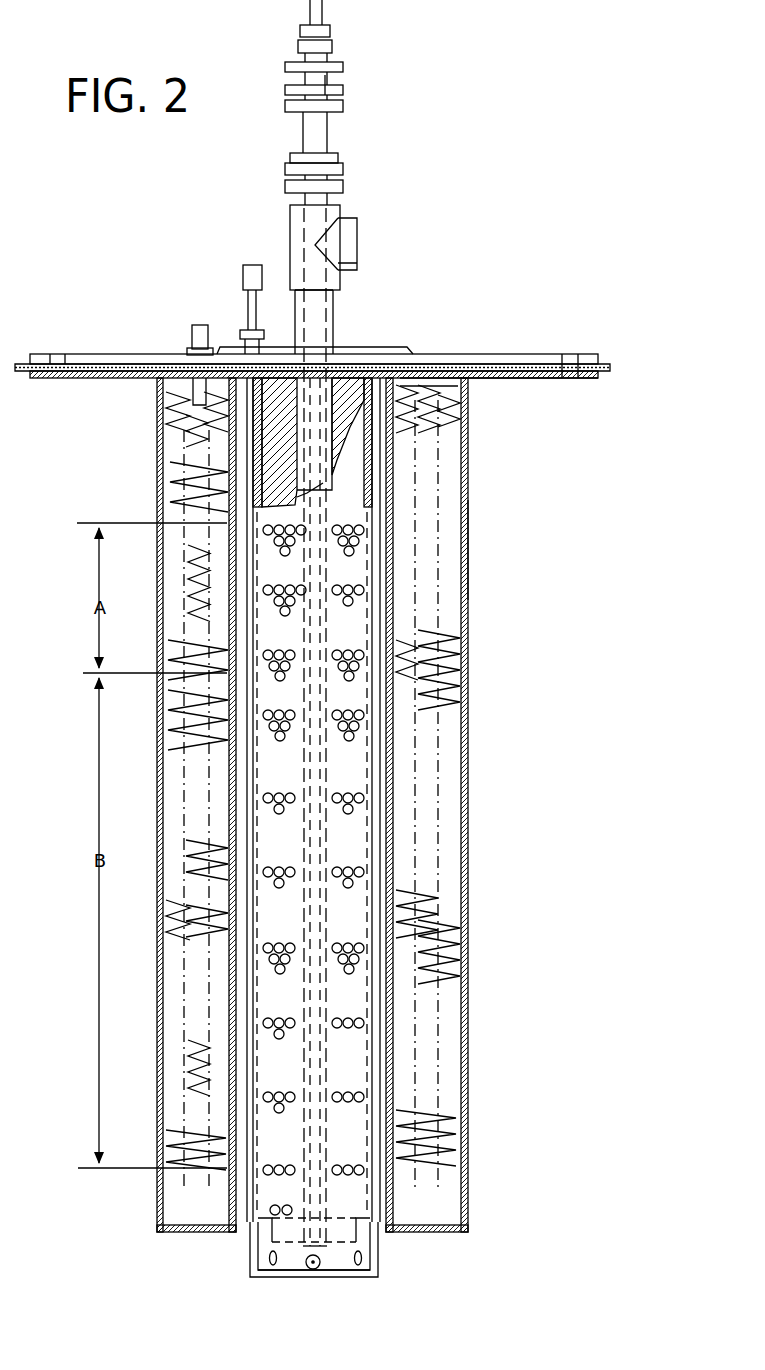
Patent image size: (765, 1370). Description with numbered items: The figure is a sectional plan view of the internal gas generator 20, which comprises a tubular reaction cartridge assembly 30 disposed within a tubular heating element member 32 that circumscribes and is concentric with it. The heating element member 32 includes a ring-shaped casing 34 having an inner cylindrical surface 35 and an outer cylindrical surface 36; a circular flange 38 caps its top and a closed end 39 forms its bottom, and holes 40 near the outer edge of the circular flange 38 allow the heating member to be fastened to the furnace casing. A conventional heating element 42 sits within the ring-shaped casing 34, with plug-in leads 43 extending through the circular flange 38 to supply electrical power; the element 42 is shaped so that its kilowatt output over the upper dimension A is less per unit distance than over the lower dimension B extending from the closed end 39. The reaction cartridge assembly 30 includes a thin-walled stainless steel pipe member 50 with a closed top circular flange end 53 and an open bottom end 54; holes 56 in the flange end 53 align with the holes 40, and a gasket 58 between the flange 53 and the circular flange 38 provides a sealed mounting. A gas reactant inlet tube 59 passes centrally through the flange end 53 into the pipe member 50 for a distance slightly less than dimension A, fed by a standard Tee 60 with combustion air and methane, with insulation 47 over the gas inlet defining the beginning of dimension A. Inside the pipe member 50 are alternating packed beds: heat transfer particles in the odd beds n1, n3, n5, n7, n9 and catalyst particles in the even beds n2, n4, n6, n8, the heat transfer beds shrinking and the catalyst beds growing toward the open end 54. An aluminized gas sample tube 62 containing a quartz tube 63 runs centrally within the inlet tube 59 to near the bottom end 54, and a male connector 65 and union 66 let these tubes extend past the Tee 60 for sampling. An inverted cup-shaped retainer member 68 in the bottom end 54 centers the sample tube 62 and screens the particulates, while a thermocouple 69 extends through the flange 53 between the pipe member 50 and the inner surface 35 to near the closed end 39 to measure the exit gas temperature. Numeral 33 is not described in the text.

The gas generator 20 is at (422, 322).
The tubular reaction cartridge assembly 30 is at (396, 742).
The tubular heating element member 32 is at (471, 477).
The top plate 33 is at (495, 384).
The ring-shaped casing 34 is at (470, 549).
The inner cylindrical surface 35 is at (396, 674).
The outer cylindrical surface 36 is at (470, 624).
The circular flange 38 is at (86, 379).
The closed end 39 is at (428, 1236).
The holes 40 is at (510, 406).
The heating element 42 is at (184, 549).
The plug-in leads 43 is at (200, 326).
The insulation 47 is at (262, 461).
The pipe member 50 is at (379, 1257).
The top circular flange end 53 is at (433, 362).
The open bottom end 54 is at (346, 1279).
The holes 56 is at (579, 362).
The gasket 58 is at (611, 370).
The gas reactant inlet tube 59 is at (336, 313).
The Tee 60 is at (346, 236).
The gas sample tube 62 is at (326, 1209).
The quartz tube 63 is at (323, 1075).
The male connector 65 is at (343, 184).
The union 66 is at (343, 73).
The retainer member 68 is at (256, 1258).
The thermocouple 69 is at (248, 276).
The first heat transfer particulate bed n1 is at (265, 632).
The catalyst particulate bed n2 is at (280, 690).
The heat transfer particulate bed n3 is at (272, 766).
The catalyst particulate bed n4 is at (290, 832).
The heat transfer particulate bed n5 is at (290, 926).
The catalyst particulate bed n6 is at (275, 996).
The heat transfer particulate bed n7 is at (250, 1070).
The catalyst particulate bed n8 is at (290, 1120).
The heat transfer particulate bed n9 is at (320, 1192).